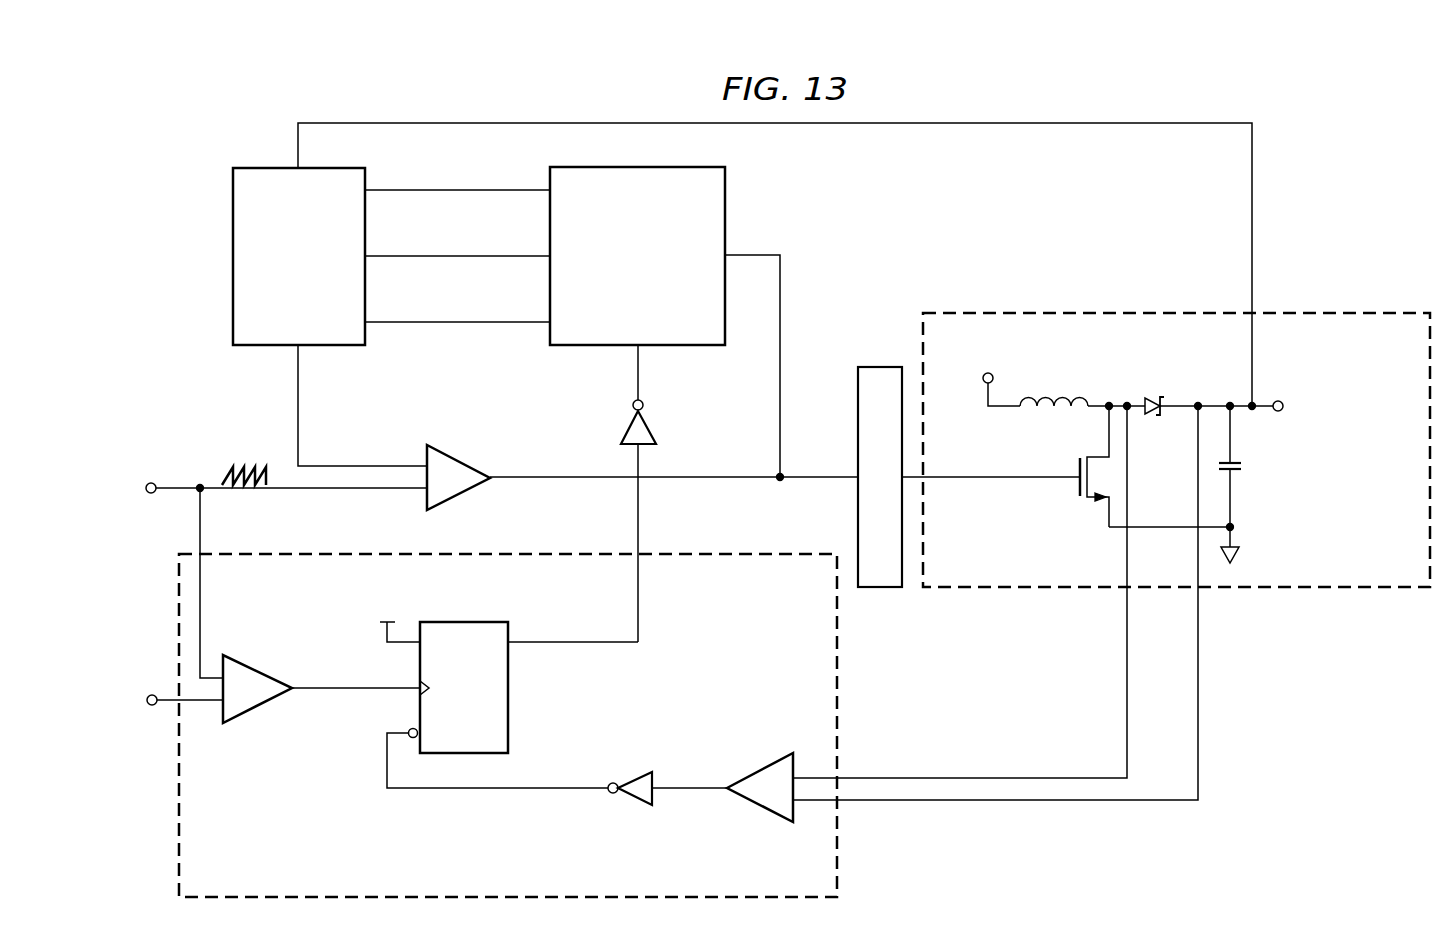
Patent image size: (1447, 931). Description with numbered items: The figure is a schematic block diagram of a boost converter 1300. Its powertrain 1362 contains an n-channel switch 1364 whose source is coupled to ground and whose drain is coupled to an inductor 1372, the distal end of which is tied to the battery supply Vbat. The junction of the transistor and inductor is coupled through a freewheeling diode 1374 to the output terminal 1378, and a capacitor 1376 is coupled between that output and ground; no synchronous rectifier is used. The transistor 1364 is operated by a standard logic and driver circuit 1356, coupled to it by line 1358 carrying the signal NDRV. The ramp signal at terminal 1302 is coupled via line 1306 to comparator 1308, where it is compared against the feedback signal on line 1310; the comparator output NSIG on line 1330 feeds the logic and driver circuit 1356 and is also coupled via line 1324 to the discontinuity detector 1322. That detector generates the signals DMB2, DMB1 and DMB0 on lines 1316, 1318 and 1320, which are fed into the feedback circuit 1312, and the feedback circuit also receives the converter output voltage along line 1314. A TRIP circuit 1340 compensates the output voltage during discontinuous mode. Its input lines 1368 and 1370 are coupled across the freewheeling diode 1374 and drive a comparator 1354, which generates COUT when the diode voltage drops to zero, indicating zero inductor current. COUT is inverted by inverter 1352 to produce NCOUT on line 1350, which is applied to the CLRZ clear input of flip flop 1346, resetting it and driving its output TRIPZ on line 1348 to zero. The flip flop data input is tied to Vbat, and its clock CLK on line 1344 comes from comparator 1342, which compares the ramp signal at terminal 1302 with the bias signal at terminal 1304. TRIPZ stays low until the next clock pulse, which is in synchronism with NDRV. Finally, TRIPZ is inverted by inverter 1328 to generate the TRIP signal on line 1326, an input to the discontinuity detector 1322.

The boost converter 1300 is at (1047, 76).
The ramp terminal 1302 is at (148, 482).
The bias terminal 1304 is at (150, 706).
The line 1306 is at (330, 489).
The comparator 1308 is at (484, 440).
The feedback line 1310 is at (297, 390).
The feedback circuit 1312 is at (326, 300).
The line 1314 is at (1253, 234).
The DMB2 signal line 1316 is at (417, 189).
The DMB1 signal line 1318 is at (417, 255).
The DMB0 signal line 1320 is at (417, 321).
The discontinuity detector 1322 is at (662, 299).
The line 1324 is at (752, 254).
The TRIP line 1326 is at (637, 362).
The inverter 1328 is at (652, 423).
The output line 1330 is at (719, 478).
The TRIP circuit 1340 is at (172, 832).
The comparator 1342 is at (260, 710).
The line 1344 is at (332, 686).
The flip flop 1346 is at (462, 621).
The TRIPZ signal line 1348 is at (595, 643).
The line 1350 is at (475, 789).
The inverter 1352 is at (630, 798).
The comparator 1354 is at (758, 808).
The logic and driver circuit 1356 is at (878, 366).
The line 1358 is at (970, 478).
The powertrain 1362 is at (1303, 596).
The n-channel switch 1364 is at (1078, 490).
The input line 1368 is at (1012, 777).
The input line 1370 is at (1040, 801).
The inductor 1372 is at (1062, 390).
The freewheeling diode 1374 is at (1155, 397).
The capacitor 1376 is at (1244, 470).
The output terminal 1378 is at (1280, 399).